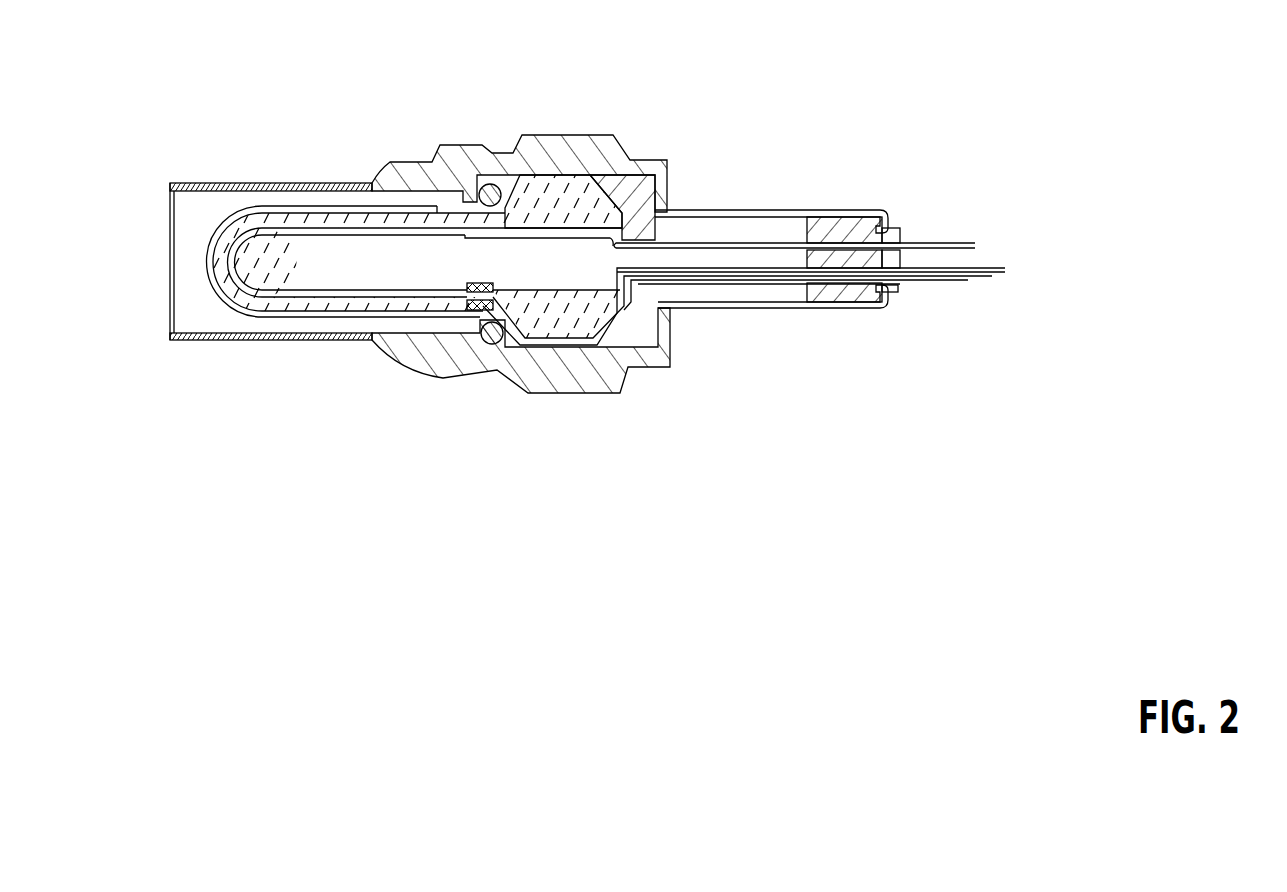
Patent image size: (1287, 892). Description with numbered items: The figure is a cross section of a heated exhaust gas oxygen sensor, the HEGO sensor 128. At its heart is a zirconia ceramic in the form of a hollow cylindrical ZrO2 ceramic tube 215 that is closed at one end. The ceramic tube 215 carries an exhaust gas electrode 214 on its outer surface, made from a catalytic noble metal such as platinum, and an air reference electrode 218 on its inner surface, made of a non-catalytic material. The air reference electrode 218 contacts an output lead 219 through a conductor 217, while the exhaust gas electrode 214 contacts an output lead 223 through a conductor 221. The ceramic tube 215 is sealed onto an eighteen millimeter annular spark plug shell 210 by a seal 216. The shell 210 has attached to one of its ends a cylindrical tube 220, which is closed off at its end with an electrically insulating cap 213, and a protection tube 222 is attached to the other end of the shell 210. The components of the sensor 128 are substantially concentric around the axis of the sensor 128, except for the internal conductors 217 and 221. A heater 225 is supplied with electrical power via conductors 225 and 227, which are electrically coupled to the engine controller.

The HEGO sensor 128 is at (668, 61).
The annular spark plug shell 210 is at (573, 153).
The electrically insulating cap 213 is at (830, 226).
The exhaust gas electrode 214 is at (236, 209).
The ZrO2 ceramic tube 215 is at (597, 187).
The seal 216 is at (490, 183).
The conductor 217 is at (622, 239).
The air reference electrode 218 is at (290, 232).
The output lead 219 is at (943, 249).
The cylindrical tube 220 is at (765, 310).
The conductor 221 is at (638, 337).
The protection tube 222 is at (213, 338).
The output lead 223 is at (948, 281).
The heater 225 is at (980, 278).
The conductor 227 is at (1003, 273).